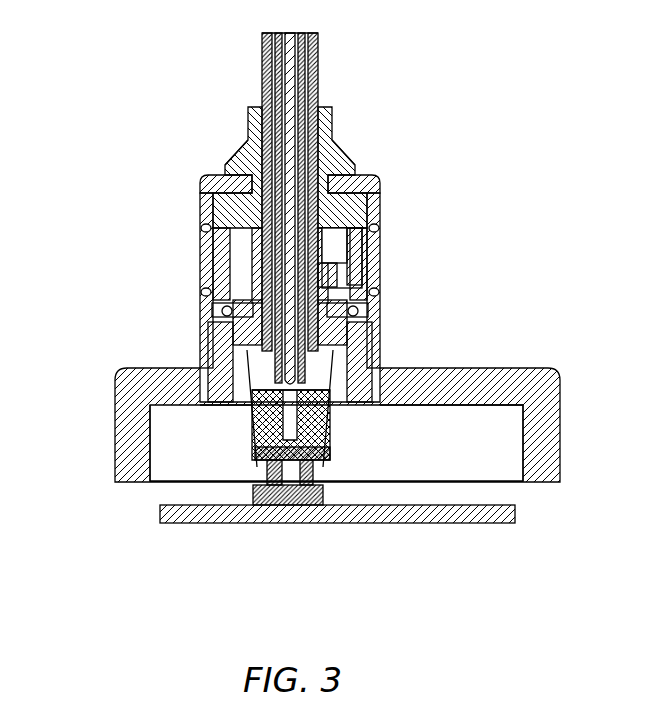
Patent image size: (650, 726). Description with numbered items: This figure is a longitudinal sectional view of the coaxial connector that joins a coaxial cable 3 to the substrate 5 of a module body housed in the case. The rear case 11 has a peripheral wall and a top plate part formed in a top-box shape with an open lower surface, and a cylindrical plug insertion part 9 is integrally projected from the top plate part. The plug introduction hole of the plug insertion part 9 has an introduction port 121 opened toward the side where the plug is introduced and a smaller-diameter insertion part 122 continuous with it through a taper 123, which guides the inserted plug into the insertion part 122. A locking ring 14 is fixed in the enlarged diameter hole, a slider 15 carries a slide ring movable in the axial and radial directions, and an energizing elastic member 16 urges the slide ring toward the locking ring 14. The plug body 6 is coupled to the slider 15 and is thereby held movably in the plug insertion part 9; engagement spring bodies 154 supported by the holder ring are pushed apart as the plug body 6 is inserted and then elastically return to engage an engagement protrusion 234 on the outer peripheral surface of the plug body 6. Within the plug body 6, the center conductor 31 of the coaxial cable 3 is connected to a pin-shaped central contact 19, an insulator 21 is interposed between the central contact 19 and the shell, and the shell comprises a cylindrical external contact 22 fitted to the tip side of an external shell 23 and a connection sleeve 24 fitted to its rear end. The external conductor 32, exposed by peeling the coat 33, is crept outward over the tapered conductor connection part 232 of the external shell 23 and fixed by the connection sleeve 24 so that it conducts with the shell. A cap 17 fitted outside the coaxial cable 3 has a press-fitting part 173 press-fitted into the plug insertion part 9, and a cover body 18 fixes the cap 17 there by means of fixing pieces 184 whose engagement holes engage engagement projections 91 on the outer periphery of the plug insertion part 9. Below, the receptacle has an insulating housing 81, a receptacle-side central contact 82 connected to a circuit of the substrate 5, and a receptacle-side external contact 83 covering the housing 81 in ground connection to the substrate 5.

The coaxial cable 3 is at (258, 88).
The center conductor 31 is at (295, 42).
The external conductor 32 is at (305, 72).
The coat 33 is at (262, 52).
The cap 17 is at (332, 126).
The press-fitting part 173 is at (243, 163).
The cover body 18 is at (362, 186).
The plug insertion part 9 is at (381, 200).
The fixing piece 184 is at (204, 226).
The engagement projection 91 is at (214, 248).
The introduction port 121 is at (340, 250).
The connection sleeve 24 is at (362, 265).
The taper 123 is at (358, 272).
The insertion part 122 is at (337, 310).
The energizing elastic member 16 is at (224, 310).
The conductor connection part 232 is at (212, 316).
The locking ring 14 is at (200, 366).
The rear case 11 is at (522, 368).
The slider 15 is at (348, 357).
The plug body 6 is at (242, 386).
The engagement spring body 154 is at (537, 412).
The insulator 21 is at (256, 420).
The engagement protrusion 234 is at (524, 446).
The central contact 19 is at (260, 462).
The external shell 23 is at (332, 455).
The receptacle-side external contact 83 is at (268, 494).
The housing 81 is at (278, 486).
The substrate 5 is at (305, 523).
The receptacle-side central contact 82 is at (312, 486).
The external contact 22 is at (440, 406).